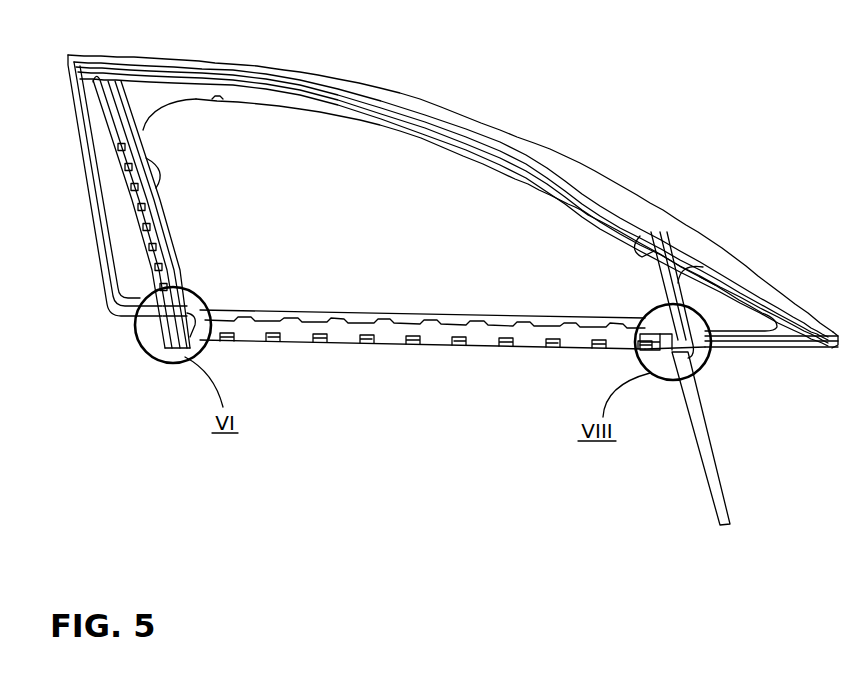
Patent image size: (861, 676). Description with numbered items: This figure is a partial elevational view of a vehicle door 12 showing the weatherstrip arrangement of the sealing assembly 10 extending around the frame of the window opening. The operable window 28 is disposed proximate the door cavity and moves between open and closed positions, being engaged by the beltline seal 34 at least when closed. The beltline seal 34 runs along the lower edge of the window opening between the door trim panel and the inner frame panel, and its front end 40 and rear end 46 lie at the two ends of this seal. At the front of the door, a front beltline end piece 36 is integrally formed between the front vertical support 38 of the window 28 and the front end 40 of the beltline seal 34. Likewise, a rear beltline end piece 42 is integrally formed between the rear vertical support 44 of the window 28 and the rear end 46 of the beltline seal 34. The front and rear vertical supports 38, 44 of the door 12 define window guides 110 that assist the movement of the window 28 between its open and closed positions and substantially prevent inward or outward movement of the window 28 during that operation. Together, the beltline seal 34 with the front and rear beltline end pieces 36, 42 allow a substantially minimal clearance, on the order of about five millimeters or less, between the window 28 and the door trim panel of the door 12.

The sealing assembly 10 is at (472, 312).
The door 12 is at (537, 123).
The operable window 28 is at (307, 148).
The beltline seal 34 is at (348, 320).
The front beltline end piece 36 is at (673, 337).
The front vertical support 38 is at (705, 285).
The front end 40 is at (690, 327).
The rear beltline end piece 42 is at (160, 323).
The rear vertical support 44 is at (165, 240).
The rear end 46 is at (192, 335).
The window guides 110 is at (152, 170).